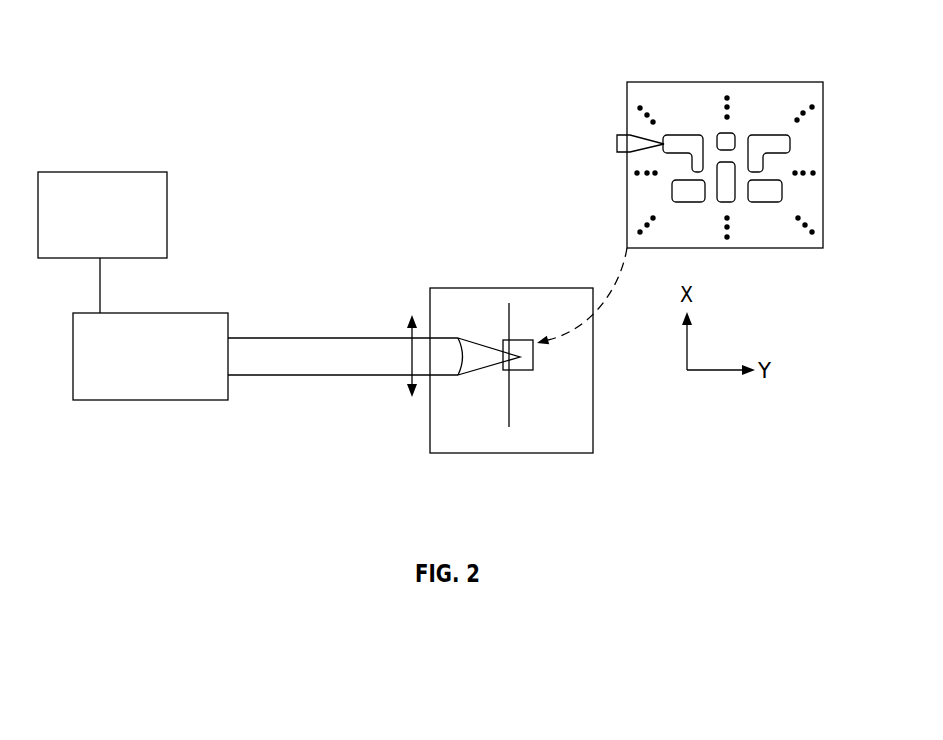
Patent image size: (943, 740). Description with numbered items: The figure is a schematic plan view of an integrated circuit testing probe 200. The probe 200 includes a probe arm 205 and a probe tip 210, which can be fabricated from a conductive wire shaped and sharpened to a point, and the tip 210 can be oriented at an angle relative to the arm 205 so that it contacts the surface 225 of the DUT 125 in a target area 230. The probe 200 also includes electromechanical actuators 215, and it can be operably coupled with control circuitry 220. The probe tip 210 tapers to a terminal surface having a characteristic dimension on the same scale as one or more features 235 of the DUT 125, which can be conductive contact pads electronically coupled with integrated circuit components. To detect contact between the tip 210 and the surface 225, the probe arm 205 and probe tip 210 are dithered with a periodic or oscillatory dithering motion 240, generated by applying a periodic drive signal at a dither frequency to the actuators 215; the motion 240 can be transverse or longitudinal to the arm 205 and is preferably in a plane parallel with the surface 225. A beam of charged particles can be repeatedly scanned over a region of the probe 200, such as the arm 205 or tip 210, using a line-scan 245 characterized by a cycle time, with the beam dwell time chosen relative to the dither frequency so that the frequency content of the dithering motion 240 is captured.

The integrated circuit testing probe 200 is at (234, 64).
The control circuitry 220 is at (167, 212).
The electromechanical actuator 215 is at (132, 313).
The probe arm 205 is at (260, 337).
The DUT 125 is at (458, 288).
The dithering motion 240 is at (412, 357).
The line-scan 245 is at (510, 400).
The target area 230 is at (533, 360).
The surface 225 is at (522, 328).
The probe tip 210 is at (488, 360).
The features 235 is at (718, 142).